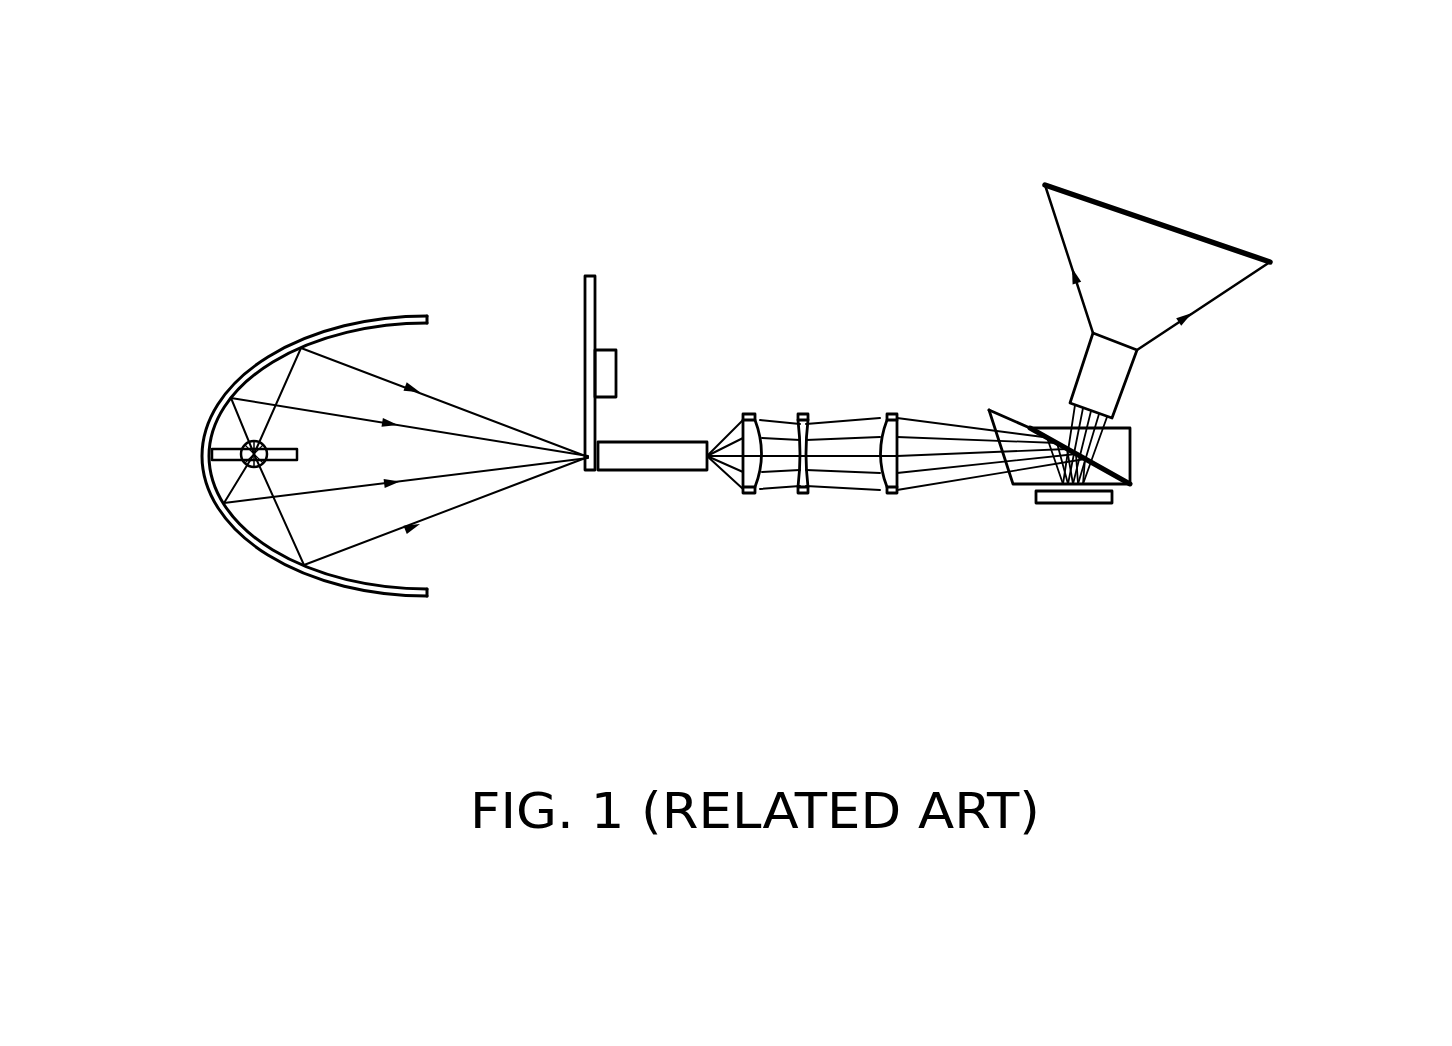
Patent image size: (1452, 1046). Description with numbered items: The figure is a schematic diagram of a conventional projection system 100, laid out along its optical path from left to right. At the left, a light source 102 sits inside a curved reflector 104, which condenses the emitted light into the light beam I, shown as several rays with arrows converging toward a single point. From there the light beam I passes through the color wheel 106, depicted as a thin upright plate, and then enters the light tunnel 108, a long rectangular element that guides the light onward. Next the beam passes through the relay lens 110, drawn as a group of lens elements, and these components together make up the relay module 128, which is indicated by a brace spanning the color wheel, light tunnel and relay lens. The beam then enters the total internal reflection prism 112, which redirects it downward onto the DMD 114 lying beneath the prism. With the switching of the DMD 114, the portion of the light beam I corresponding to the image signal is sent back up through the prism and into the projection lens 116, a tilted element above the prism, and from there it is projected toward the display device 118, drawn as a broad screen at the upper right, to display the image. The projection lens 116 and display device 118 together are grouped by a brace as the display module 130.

The projection system 100 is at (140, 137).
The light source 102 is at (232, 475).
The reflector 104 is at (327, 324).
The light beam I is at (452, 528).
The color wheel 106 is at (590, 472).
The light tunnel 108 is at (658, 458).
The relay lens 110 is at (898, 516).
The relay module 128 is at (820, 598).
The total internal reflection prism 112 is at (1113, 450).
The DMD 114 is at (1112, 500).
The projection lens 116 is at (1103, 388).
The display device 118 is at (1190, 233).
The display module 130 is at (1335, 203).